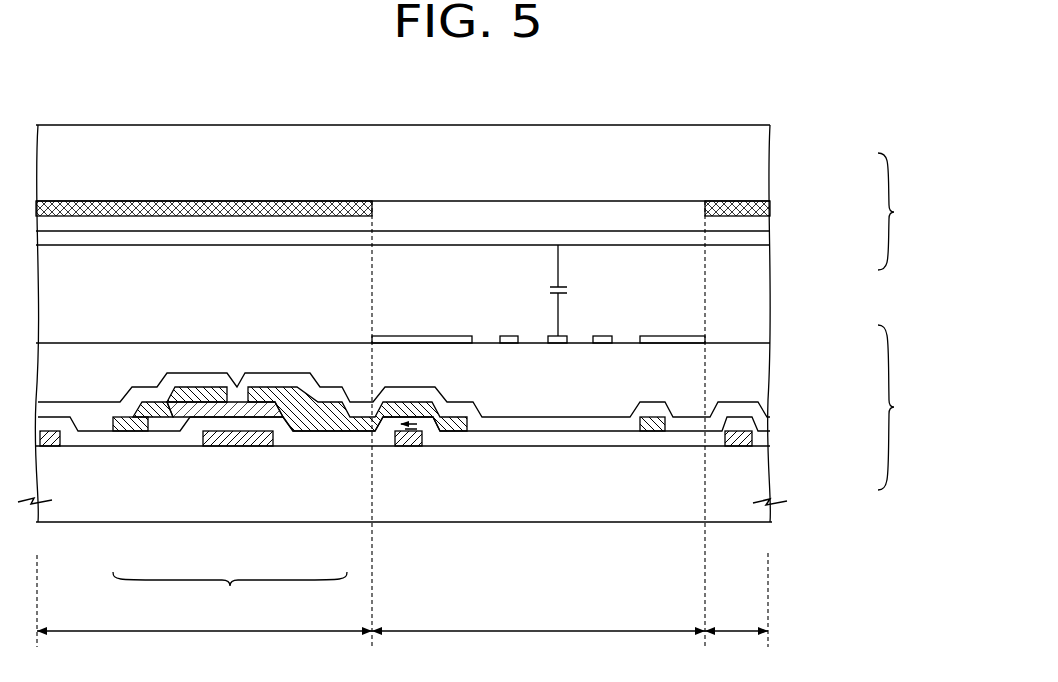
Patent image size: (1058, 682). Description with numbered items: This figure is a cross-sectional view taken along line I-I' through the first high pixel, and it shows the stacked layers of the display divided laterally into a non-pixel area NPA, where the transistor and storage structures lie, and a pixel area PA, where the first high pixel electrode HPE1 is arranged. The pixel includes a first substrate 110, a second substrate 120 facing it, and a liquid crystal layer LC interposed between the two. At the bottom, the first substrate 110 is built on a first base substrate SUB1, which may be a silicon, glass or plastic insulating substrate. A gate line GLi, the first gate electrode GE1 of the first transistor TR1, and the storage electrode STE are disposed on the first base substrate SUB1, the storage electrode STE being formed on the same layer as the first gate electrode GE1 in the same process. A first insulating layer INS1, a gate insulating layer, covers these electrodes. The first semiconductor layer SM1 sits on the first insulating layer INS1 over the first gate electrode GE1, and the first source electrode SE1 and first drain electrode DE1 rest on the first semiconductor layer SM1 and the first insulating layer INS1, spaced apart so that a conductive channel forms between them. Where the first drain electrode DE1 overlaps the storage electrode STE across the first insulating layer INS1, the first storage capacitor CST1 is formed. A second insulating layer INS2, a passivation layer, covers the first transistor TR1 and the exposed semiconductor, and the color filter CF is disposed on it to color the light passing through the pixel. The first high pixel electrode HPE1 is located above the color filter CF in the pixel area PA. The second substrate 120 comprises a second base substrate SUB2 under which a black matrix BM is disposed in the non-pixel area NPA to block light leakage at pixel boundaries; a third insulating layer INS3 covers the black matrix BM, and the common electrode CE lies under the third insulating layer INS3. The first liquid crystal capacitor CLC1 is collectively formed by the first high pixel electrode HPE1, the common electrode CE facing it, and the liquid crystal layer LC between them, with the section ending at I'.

The second base substrate SUB2 is at (770, 167).
The black matrix BM is at (770, 206).
The third insulating layer INS3 is at (770, 224).
The common electrode CE is at (770, 239).
The liquid crystal layer LC is at (766, 293).
The first liquid crystal capacitor CLC1 is at (585, 290).
The first high pixel electrode HPE1 is at (705, 338).
The second substrate 120 is at (906, 211).
The color filter CF is at (763, 378).
The second insulating layer INS2 is at (770, 422).
The first insulating layer INS1 is at (770, 438).
The first base substrate SUB1 is at (770, 477).
The first substrate 110 is at (906, 407).
The gate line GLi is at (45, 446).
The first source electrode SE1 is at (132, 432).
The first gate electrode GE1 is at (217, 446).
The first semiconductor layer SM1 is at (258, 410).
The first drain electrode DE1 is at (312, 412).
The first transistor TR1 is at (230, 593).
The first storage capacitor CST1 is at (400, 428).
The storage electrode STE is at (412, 446).
The line I-I' I is at (35, 545).
The line I- I' is at (770, 543).
The non-pixel area NPA is at (402, 647).
The pixel area PA is at (538, 647).